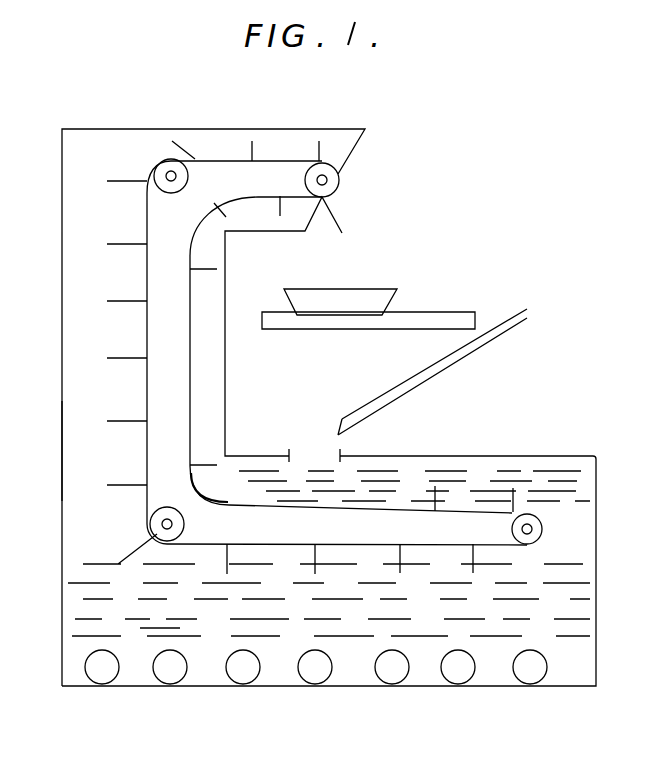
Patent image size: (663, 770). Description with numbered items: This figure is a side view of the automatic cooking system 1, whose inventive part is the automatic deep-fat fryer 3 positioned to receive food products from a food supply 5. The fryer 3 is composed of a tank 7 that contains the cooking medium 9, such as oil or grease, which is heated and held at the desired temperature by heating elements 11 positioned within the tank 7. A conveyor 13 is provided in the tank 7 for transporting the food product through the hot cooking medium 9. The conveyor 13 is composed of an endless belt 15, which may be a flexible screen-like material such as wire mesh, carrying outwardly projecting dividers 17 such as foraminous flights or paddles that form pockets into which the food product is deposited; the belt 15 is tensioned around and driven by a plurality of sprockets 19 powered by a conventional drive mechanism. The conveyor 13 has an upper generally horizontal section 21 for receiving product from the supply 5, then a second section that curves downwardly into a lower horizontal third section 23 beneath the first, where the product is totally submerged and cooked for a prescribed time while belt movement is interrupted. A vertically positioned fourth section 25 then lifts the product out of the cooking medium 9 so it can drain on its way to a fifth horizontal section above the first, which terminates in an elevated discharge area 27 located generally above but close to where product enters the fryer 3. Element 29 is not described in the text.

The automatic cooking system 1 is at (510, 455).
The automatic deep-fat fryer 3 is at (62, 222).
The food supply 5 is at (497, 323).
The tank 7 is at (62, 562).
The cooking medium 9 is at (145, 627).
The heating elements 11 is at (245, 672).
The conveyor 13 is at (147, 328).
The endless belt 15 is at (355, 545).
The dividers 17 is at (473, 567).
The sprockets 19 is at (537, 528).
The upper generally horizontal section 21 is at (425, 468).
The lower horizontal third section 23 is at (425, 567).
The fourth section 25 is at (78, 453).
The elevated discharge area 27 is at (352, 172).
The tray and shelf 29 is at (368, 309).